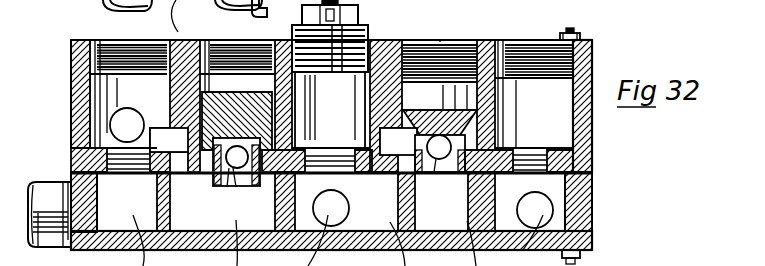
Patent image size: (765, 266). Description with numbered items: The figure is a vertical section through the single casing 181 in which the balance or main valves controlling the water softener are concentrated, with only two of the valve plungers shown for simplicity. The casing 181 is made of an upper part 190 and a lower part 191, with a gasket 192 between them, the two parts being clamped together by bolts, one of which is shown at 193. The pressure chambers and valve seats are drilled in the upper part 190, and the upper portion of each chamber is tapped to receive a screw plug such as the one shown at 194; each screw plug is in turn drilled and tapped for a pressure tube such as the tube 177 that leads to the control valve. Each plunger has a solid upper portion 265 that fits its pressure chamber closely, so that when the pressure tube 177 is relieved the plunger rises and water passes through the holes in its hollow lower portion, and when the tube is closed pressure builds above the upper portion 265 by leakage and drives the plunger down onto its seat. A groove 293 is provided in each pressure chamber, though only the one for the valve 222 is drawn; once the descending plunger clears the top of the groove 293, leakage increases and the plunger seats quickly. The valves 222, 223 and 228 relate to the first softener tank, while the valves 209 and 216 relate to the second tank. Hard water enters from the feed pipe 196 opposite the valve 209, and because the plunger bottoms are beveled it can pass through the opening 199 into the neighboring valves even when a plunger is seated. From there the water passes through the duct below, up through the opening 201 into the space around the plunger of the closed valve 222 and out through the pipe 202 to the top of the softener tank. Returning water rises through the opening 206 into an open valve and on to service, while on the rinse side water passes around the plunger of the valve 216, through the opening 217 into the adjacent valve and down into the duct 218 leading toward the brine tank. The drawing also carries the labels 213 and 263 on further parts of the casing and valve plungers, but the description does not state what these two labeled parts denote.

The pressure tube 177 is at (396, 0).
The casing 181 is at (592, 233).
The upper part 190 is at (592, 150).
The lower part 191 is at (580, 207).
The gasket 192 is at (592, 175).
The bolt 193 is at (582, 258).
The screw plug 194 is at (350, 17).
The feed pipe 196 is at (272, 10).
The opening 199 is at (289, 144).
The opening 201 is at (178, 158).
The pipe 202 is at (124, 120).
The opening 206 is at (388, 165).
The valve 209 is at (216, 16).
The fitting 213 is at (104, 6).
The valve 216 is at (445, 2).
The opening 217 is at (484, 143).
The duct 218 is at (527, 251).
The valve 222 is at (110, 91).
The valve 223 is at (378, 52).
The valve 228 is at (590, 131).
The chamber 263 is at (264, 92).
The upper portion of plunger 265 is at (430, 100).
The groove 293 is at (180, 40).